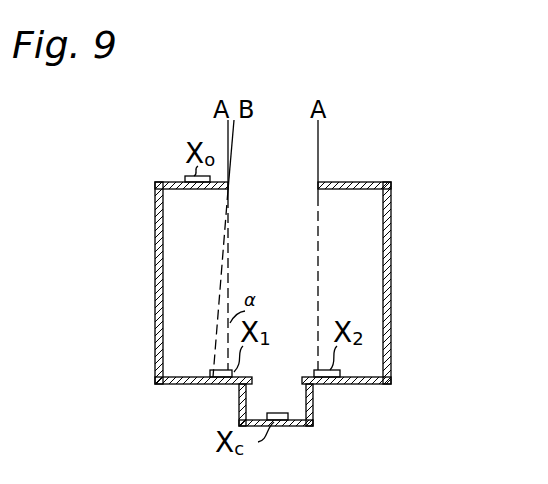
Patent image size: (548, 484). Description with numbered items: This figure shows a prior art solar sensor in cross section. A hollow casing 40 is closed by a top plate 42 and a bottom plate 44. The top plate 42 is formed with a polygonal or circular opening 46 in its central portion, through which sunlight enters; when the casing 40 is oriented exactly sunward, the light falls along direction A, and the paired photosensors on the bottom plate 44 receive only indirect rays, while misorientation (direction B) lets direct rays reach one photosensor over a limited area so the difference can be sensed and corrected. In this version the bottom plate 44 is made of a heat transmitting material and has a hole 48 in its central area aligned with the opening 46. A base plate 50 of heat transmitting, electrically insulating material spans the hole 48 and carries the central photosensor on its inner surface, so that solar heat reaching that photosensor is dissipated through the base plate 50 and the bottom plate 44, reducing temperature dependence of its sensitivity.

The hollow casing 40 is at (392, 232).
The top plate 42 is at (172, 182).
The bottom plate 44 is at (350, 386).
The opening 46 is at (264, 190).
The hole 48 is at (280, 400).
The base plate 50 is at (290, 428).